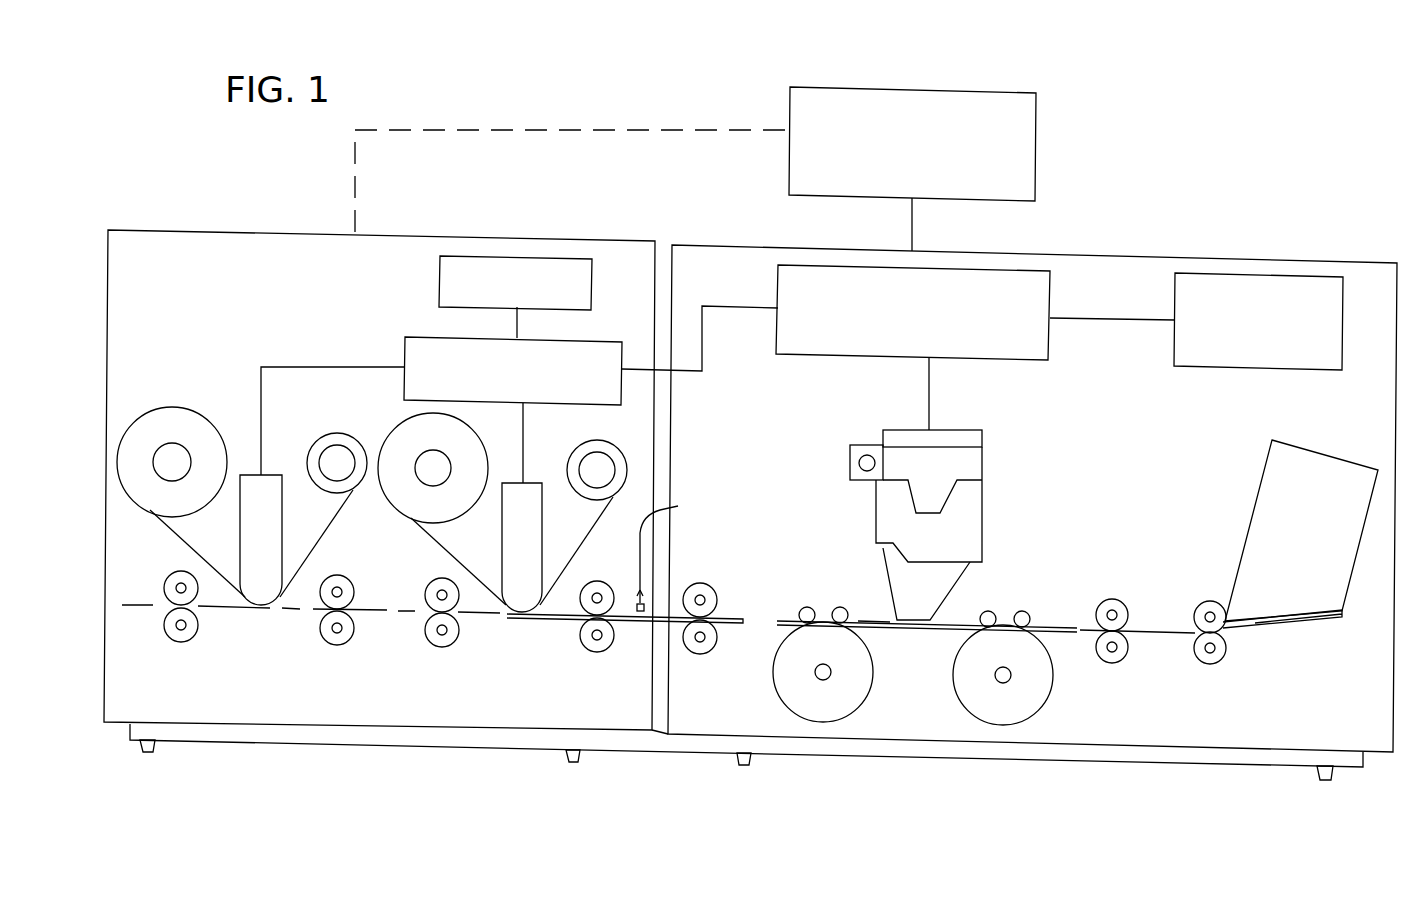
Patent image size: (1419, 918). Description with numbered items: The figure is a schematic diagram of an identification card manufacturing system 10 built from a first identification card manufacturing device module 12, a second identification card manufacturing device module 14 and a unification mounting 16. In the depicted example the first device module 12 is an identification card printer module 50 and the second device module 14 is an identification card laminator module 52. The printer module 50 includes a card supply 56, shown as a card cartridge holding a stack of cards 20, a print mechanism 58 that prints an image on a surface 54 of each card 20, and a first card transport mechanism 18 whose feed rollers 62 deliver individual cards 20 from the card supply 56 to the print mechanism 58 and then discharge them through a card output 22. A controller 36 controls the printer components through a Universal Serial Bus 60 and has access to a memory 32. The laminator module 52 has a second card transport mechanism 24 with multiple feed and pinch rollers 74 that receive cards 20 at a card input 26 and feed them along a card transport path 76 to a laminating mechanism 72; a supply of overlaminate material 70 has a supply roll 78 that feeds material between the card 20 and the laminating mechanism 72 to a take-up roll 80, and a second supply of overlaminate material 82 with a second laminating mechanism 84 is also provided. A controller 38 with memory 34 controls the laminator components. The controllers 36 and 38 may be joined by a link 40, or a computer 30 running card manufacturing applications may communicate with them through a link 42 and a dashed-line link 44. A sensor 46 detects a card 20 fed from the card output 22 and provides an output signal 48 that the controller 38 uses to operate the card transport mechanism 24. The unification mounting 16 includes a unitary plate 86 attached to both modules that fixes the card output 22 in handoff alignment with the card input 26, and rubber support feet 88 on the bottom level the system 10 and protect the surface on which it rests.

The identification card manufacturing system 10 is at (1218, 84).
The first identification card manufacturing device module 12 is at (1235, 257).
The second identification card manufacturing device module 14 is at (168, 227).
The unification mounting 16 is at (1070, 760).
The first card transport mechanism 18 is at (1112, 550).
The individual cards 20 is at (733, 624).
The card output 22 is at (683, 580).
The second card transport mechanism 24 is at (352, 658).
The card input 26 is at (635, 633).
The computer 30 is at (1036, 117).
The memory 32 is at (1248, 368).
The memory 34 is at (440, 272).
The controller 36 is at (1046, 360).
The controller 38 is at (420, 338).
The link 40 is at (702, 372).
The link 42 is at (912, 220).
The link 44 is at (462, 129).
The sensor 46 is at (637, 602).
The output signal 48 is at (673, 548).
The identification card printer module 50 is at (1090, 252).
The identification card laminator module 52 is at (257, 228).
The surface 54 is at (868, 618).
The card supply 56 is at (1272, 483).
The print mechanism 58 is at (973, 497).
The Universal Serial Bus 60 is at (929, 400).
The feed rollers 62 is at (717, 595).
The supply of overlaminate material 70 is at (385, 413).
The laminating mechanism 72 is at (510, 533).
The feed and pinch rollers 74 is at (165, 633).
The card transport path 76 is at (290, 613).
The supply roll 78 is at (407, 500).
The take-up roll 80 is at (605, 442).
The second supply of overlaminate material 82 is at (157, 385).
The second laminating mechanism 84 is at (247, 532).
The unitary plate 86 is at (393, 738).
The support feet 88 is at (1331, 777).